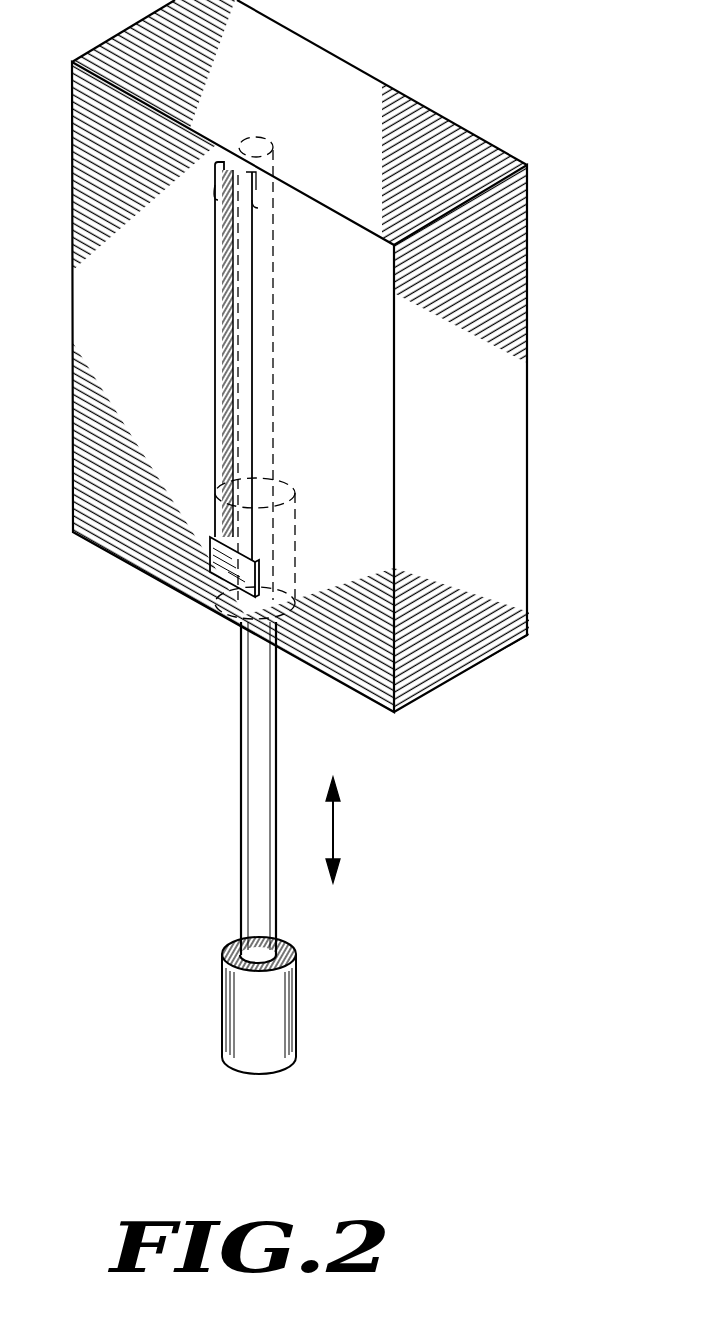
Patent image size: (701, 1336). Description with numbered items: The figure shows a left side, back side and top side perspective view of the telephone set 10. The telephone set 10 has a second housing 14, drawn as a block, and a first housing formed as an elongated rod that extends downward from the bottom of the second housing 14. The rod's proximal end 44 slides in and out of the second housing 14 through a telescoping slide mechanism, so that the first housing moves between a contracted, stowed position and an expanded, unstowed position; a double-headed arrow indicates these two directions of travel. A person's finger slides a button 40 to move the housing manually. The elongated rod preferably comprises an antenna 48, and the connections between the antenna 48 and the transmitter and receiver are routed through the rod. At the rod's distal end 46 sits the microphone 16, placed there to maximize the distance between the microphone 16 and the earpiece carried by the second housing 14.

The telephone set 10 is at (603, 1113).
The second housing 14 is at (518, 447).
The button 40 is at (252, 576).
The proximal end 44 is at (235, 622).
The antenna 48 is at (253, 788).
The microphone 16 is at (222, 1042).
The distal end 46 is at (263, 1060).